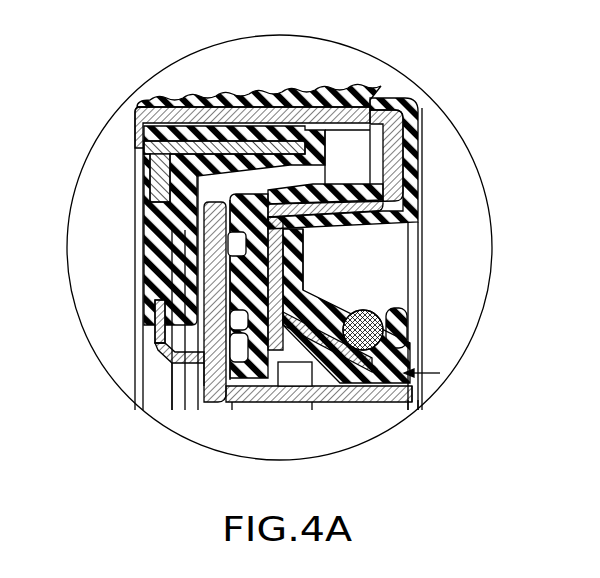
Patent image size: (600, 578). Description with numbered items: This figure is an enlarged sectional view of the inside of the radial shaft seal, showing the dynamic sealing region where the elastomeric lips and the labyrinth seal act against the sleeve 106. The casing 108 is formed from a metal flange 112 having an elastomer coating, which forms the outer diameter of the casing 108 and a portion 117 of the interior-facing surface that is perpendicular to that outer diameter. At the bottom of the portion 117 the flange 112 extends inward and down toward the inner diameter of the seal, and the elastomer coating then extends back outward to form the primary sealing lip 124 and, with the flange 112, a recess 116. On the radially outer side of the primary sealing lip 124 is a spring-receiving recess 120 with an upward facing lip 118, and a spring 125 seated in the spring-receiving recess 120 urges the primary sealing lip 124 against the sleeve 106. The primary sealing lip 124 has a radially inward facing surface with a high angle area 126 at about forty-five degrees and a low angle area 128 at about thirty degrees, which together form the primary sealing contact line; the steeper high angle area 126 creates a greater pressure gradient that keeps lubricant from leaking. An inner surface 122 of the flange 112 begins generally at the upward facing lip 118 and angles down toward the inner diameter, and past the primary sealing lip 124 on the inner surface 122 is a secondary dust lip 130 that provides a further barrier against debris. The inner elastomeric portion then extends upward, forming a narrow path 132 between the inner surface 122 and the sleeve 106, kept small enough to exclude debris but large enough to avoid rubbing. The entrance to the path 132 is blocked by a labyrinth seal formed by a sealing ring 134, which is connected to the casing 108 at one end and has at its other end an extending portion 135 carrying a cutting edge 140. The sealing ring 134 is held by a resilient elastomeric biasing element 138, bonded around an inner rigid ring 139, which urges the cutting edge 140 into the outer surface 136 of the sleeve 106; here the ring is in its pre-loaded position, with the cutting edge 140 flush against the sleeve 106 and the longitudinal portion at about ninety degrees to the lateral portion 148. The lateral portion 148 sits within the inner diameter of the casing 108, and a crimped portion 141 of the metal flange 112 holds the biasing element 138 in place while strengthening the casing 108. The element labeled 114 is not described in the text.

The sleeve 106 is at (420, 397).
The casing 108 is at (310, 100).
The metal flange 112 is at (417, 177).
The outer wall line 114 is at (422, 200).
The recess 116 is at (393, 270).
The portion of interior-facing surface 117 is at (418, 140).
The upward facing lip 118 is at (410, 317).
The spring-receiving recess 120 is at (383, 357).
The inner surface of flange 122 is at (370, 160).
The primary sealing lip 124 is at (412, 388).
The spring 125 is at (360, 310).
The high angle area 126 is at (440, 373).
The low angle area 128 is at (323, 382).
The secondary dust lip 130 is at (237, 405).
The path 132 is at (237, 247).
The sealing ring 134 is at (160, 348).
The extending portion 135 is at (178, 362).
The outer surface of sleeve 136 is at (200, 365).
The biasing element 138 is at (150, 263).
The inner rigid ring 139 is at (160, 180).
The cutting edge 140 is at (186, 380).
The crimped portion 141 is at (140, 137).
The lateral portion 148 is at (193, 130).